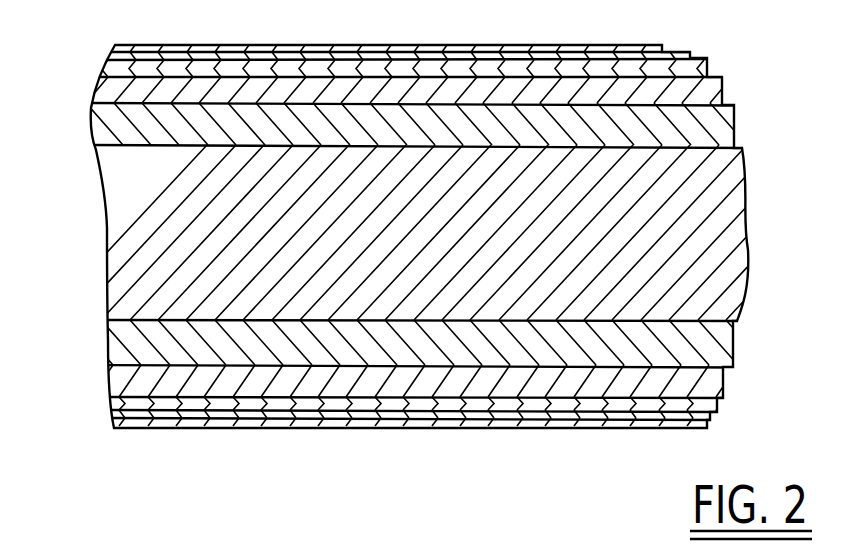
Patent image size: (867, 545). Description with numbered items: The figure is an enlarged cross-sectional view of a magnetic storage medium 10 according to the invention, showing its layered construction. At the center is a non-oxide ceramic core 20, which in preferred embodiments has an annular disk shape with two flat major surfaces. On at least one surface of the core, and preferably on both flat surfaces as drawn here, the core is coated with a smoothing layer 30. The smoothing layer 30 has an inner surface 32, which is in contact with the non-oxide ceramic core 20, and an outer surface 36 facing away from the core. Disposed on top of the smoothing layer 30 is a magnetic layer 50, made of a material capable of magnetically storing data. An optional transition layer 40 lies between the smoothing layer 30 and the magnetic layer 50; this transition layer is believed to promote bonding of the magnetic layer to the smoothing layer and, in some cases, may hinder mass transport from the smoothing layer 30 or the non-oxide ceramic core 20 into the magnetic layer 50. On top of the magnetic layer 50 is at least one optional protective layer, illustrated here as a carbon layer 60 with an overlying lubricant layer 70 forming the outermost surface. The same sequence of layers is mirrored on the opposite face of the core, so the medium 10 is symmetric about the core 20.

The magnetic storage medium 10 is at (110, 45).
The non-oxide ceramic core 20 is at (748, 233).
The smoothing layer 30 is at (780, 333).
The inner surface 32 is at (337, 318).
The outer surface 36 is at (443, 367).
The transition layer 40 is at (780, 371).
The magnetic layer 50 is at (780, 398).
The carbon layer 60 is at (780, 421).
The lubricant layer 70 is at (780, 447).